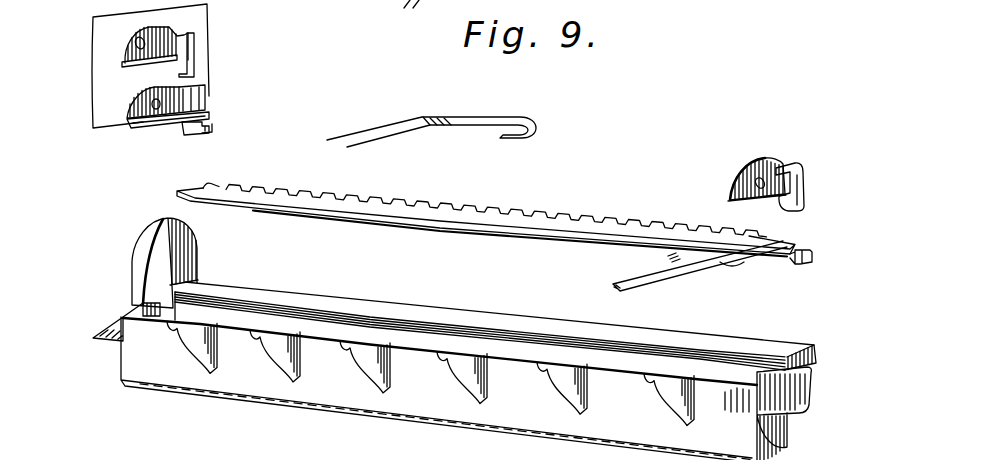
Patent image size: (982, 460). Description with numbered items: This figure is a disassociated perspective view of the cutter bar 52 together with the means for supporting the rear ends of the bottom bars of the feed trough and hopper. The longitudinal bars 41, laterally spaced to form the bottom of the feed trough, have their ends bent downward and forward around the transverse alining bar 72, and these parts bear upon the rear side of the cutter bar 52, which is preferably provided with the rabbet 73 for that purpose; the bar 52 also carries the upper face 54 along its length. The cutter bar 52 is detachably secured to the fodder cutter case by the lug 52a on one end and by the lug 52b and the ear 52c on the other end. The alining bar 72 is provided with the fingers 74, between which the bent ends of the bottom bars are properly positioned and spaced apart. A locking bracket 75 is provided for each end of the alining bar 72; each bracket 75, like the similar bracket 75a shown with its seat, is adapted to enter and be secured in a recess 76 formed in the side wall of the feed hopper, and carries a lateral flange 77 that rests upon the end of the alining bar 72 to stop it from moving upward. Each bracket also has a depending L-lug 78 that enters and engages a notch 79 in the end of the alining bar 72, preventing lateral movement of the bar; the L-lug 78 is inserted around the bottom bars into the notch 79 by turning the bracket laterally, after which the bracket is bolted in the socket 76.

The longitudinal bar 41 is at (380, 132).
The cutter bar 52 is at (347, 302).
The lug 52a is at (810, 380).
The lug 52b is at (124, 320).
The ear 52c is at (197, 256).
The top face 54 is at (522, 322).
The alining bar 72 is at (468, 228).
The rabbet 73 is at (716, 366).
The fingers 74 is at (622, 232).
The locking bracket 75 is at (800, 172).
The dome bracket with post 75a is at (186, 44).
The recess 76 is at (204, 98).
The lateral flange 77 is at (170, 124).
The depending L-lug 78 is at (212, 130).
The notch 79 is at (795, 260).